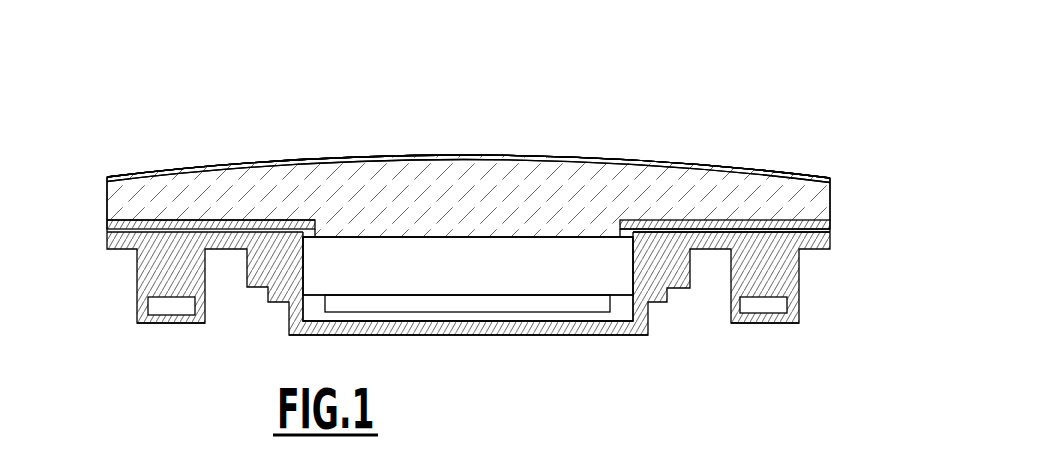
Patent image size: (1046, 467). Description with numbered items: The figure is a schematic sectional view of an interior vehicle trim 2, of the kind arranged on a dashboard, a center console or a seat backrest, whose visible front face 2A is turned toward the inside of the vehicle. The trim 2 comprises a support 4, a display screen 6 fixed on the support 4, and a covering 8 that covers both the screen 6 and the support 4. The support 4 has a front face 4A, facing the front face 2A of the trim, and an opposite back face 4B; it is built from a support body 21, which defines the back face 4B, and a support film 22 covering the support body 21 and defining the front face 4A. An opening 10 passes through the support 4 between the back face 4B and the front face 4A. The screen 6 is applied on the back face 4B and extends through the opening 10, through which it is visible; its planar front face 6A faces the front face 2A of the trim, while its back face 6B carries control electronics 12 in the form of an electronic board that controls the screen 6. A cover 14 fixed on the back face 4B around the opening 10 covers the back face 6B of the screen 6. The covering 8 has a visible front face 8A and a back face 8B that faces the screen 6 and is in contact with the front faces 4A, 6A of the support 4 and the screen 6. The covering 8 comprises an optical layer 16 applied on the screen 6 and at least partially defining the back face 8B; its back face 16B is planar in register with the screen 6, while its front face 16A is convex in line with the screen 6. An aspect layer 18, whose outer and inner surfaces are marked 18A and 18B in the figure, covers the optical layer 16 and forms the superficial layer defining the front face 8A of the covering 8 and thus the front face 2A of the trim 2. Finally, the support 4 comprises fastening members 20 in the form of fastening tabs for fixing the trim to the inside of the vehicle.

The trim 2 is at (413, 105).
The front face of the trim 2A is at (187, 168).
The support 4 is at (118, 250).
The front face of the support 4A is at (250, 231).
The back face of the support 4B is at (228, 253).
The display screen 6 is at (491, 239).
The front face of the screen 6A is at (595, 231).
The back face of the screen 6B is at (622, 300).
The covering 8 is at (83, 188).
The front face of the covering 8A is at (468, 166).
The back face of the covering 8B is at (163, 221).
The opening 10 is at (325, 233).
The control electronics 12 is at (523, 302).
The cover 14 is at (452, 327).
The optical layer 16 is at (127, 202).
The front face of the optical layer 16A is at (703, 163).
The back face of the optical layer 16B is at (753, 237).
The aspect layer 18 is at (152, 177).
The upper surface of coating layer 18A is at (468, 166).
The lower surface of coating layer 18B is at (646, 186).
The fastening members 20 is at (145, 285).
The support body 21 is at (807, 240).
The support film 22 is at (830, 225).